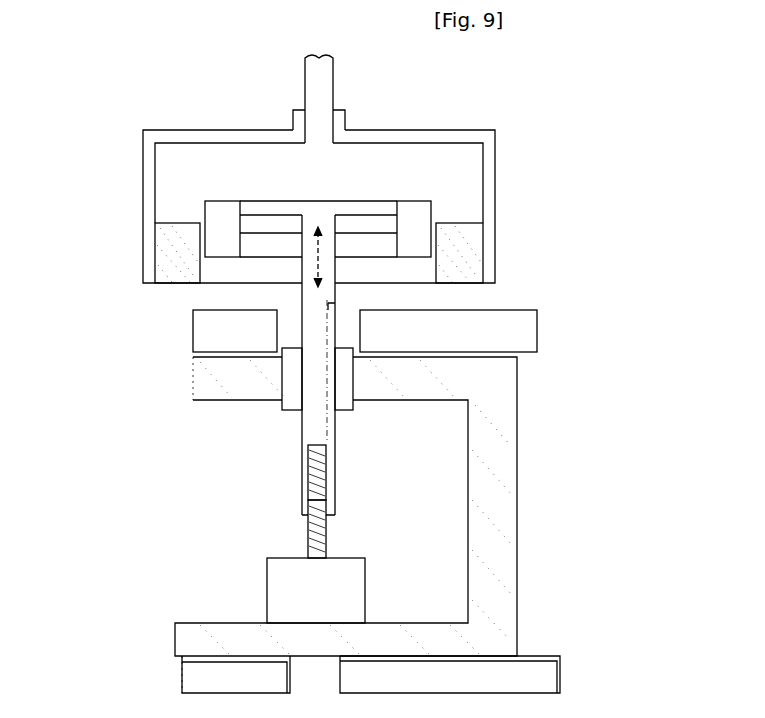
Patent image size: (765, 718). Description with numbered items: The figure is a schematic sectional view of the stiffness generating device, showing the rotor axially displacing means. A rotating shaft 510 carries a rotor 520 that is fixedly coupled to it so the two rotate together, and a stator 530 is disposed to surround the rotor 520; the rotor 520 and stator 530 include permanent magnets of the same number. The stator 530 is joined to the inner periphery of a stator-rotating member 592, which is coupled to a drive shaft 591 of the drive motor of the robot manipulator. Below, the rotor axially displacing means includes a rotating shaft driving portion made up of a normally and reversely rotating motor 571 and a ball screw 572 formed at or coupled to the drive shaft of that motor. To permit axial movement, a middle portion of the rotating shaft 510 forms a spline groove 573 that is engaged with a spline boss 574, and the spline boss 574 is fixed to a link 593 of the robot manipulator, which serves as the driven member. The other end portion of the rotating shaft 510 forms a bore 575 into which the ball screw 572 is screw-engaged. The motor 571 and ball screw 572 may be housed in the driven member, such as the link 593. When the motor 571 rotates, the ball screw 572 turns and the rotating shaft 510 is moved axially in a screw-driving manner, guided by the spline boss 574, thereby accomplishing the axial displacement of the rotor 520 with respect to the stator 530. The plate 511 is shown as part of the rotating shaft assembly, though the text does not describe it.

The rotating shaft 510 is at (300, 296).
The support plate 511 is at (362, 200).
The rotor 520 is at (204, 205).
The stator 530 is at (150, 262).
The normally and reversely rotating motor 571 is at (267, 584).
The ball screw 572 is at (307, 521).
The spline groove 573 is at (300, 429).
The spline boss 574 is at (346, 413).
The bore 575 is at (307, 477).
The drive shaft 591 is at (333, 77).
The stator-rotating member 592 is at (496, 182).
The link 593 is at (518, 490).